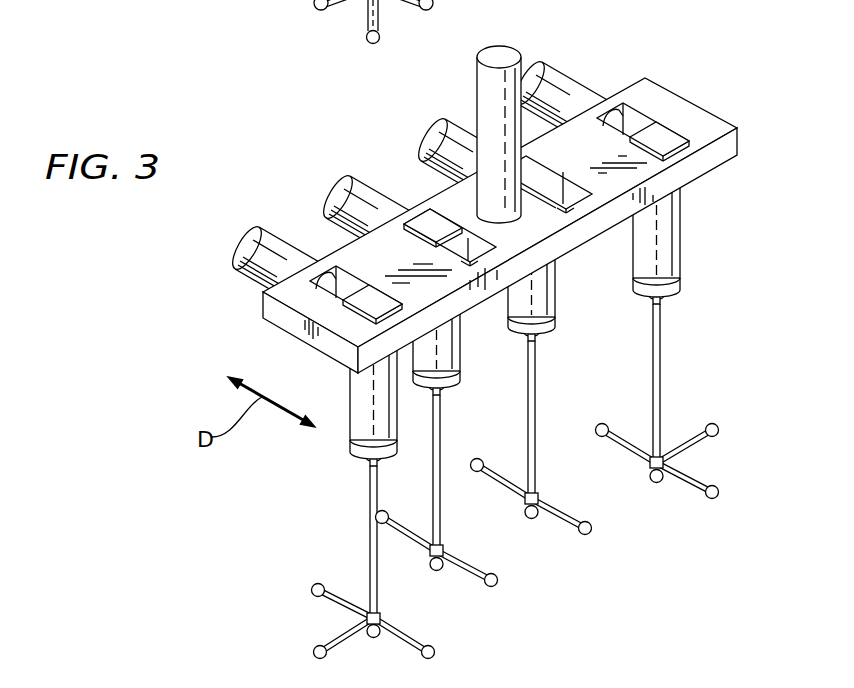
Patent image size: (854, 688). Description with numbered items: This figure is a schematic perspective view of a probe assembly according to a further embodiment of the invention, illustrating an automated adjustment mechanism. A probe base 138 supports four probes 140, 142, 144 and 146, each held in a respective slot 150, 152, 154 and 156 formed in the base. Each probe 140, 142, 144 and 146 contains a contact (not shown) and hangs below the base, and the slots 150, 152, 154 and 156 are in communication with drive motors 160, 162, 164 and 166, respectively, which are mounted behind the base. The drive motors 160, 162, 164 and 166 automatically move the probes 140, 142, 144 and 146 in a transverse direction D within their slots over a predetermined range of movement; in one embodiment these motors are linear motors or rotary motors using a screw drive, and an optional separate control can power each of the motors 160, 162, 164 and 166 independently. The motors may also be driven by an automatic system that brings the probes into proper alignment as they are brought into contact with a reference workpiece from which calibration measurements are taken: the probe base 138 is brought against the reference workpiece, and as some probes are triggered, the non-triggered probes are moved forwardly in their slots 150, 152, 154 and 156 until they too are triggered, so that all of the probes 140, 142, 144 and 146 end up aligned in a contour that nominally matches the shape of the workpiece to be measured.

The probe base 138 is at (695, 91).
The probe 140 is at (349, 491).
The probe 142 is at (461, 437).
The probe 144 is at (555, 392).
The probe 146 is at (691, 340).
The slot 150 is at (342, 265).
The slot 152 is at (471, 237).
The slot 154 is at (580, 188).
The slot 156 is at (636, 106).
The drive motor 160 is at (255, 240).
The drive motor 162 is at (350, 187).
The drive motor 164 is at (443, 128).
The drive motor 166 is at (542, 78).